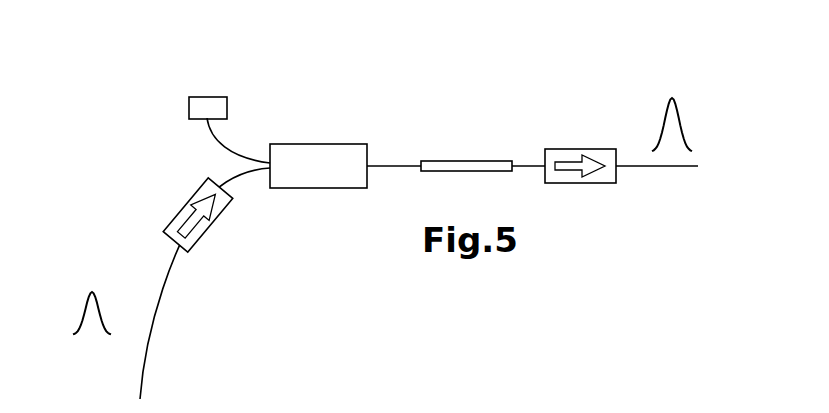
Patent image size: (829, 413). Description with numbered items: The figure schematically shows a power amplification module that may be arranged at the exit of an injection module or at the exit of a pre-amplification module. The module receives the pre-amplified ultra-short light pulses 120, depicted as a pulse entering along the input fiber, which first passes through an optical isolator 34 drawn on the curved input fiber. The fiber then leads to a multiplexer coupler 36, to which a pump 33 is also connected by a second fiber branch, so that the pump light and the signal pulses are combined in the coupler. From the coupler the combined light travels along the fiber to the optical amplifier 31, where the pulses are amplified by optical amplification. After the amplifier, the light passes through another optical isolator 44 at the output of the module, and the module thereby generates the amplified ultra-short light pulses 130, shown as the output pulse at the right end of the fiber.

The optical amplifier 31 is at (490, 160).
The pump 33 is at (200, 97).
The optical isolator 34 is at (202, 240).
The multiplexer coupler 36 is at (335, 152).
The optical isolator 44 is at (598, 149).
The pre-amplified ultra-short light pulses 120 is at (100, 306).
The amplified ultra-short light pulses 130 is at (682, 119).